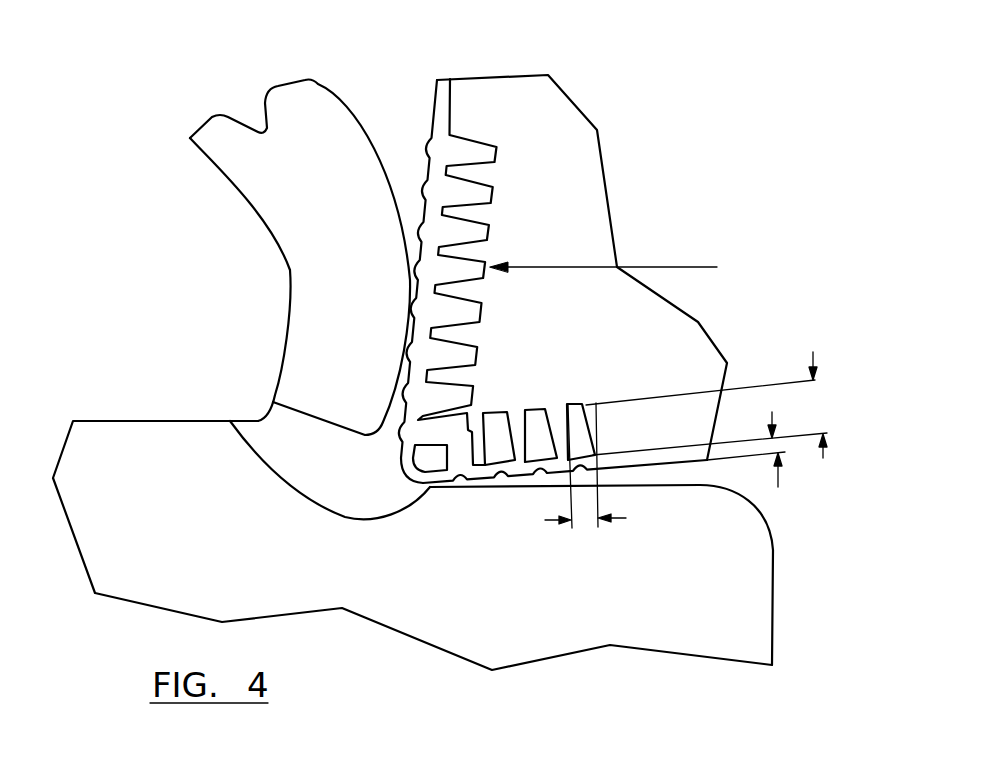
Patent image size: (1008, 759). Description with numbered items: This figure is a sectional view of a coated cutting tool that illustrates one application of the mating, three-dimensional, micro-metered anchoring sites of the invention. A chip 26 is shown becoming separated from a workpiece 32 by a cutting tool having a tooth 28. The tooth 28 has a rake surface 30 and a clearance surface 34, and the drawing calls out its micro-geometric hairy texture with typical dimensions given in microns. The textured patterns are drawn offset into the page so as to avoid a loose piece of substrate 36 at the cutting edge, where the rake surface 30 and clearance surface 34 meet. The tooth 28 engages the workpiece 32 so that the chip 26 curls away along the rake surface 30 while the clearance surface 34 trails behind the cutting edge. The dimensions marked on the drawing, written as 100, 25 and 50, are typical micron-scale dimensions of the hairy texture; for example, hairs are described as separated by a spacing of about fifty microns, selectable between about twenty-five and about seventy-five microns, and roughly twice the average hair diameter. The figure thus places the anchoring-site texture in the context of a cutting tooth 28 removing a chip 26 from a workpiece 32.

The chip 26 is at (317, 250).
The tooth 28 is at (590, 195).
The rake surface 30 is at (450, 110).
The workpiece 32 is at (755, 618).
The clearance surface 34 is at (678, 447).
The loose piece of substrate 36 is at (427, 462).
The land height dimension 100 is at (820, 405).
The land thickness dimension 25 is at (782, 461).
The slot width dimension 50 is at (604, 469).